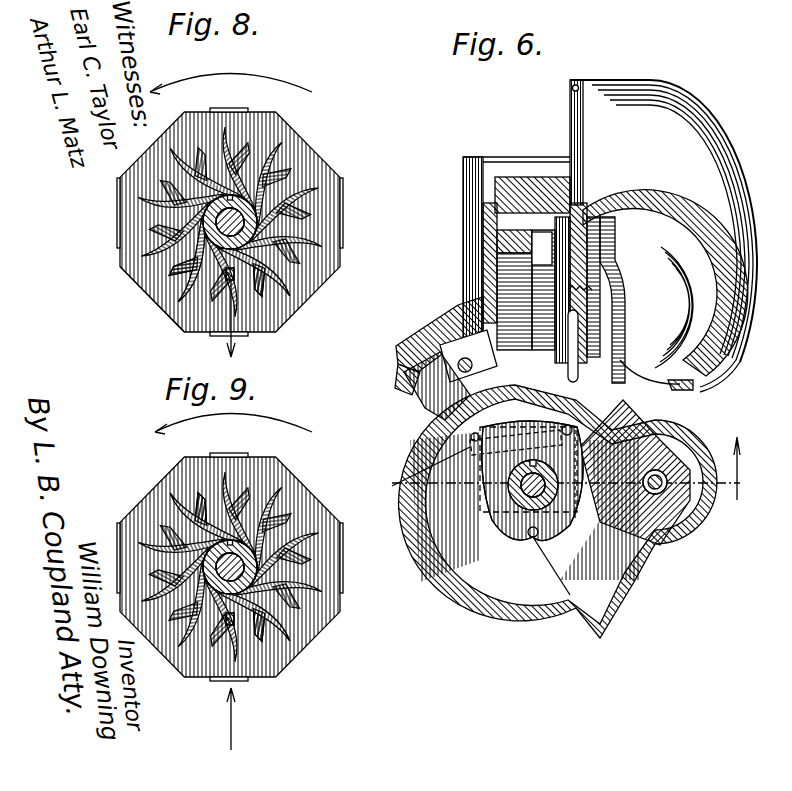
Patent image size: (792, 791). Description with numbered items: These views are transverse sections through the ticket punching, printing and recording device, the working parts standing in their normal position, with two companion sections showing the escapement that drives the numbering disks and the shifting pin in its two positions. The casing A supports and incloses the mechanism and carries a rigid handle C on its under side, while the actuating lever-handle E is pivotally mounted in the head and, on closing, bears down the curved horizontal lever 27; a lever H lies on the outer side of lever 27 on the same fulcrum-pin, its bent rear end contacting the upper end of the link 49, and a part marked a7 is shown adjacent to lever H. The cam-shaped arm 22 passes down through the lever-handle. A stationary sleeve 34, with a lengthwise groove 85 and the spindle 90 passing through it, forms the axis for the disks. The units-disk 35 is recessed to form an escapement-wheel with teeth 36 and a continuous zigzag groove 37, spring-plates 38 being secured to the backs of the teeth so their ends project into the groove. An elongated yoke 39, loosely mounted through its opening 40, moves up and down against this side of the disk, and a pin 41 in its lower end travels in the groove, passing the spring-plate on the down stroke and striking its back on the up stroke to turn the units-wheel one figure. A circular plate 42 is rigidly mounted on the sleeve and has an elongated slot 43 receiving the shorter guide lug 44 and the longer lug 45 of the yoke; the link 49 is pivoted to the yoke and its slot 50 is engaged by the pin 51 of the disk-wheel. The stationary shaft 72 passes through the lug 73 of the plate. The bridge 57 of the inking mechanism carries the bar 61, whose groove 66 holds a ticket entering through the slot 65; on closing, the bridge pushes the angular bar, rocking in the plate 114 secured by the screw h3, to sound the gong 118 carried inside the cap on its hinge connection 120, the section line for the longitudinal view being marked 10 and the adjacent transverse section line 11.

In FIG. 6, the section line 10 is at (749, 468).
In FIG. 6, the section line 11 is at (742, 228).
In FIG. 6, the cam-shaped arm 22 is at (605, 232).
In FIG. 6, the curved horizontal lever 27 is at (482, 238).
In FIG. 8, the stationary sleeve 34 is at (205, 221).
In FIG. 9, the stationary sleeve 34 is at (262, 568).
In FIG. 8, the units-disk 35 is at (142, 278).
In FIG. 6, the units-disk 35 is at (505, 500).
In FIG. 8, the teeth 36 is at (288, 200).
In FIG. 9, the teeth 36 is at (292, 525).
In FIG. 8, the continuous zigzag groove 37 is at (212, 290).
In FIG. 9, the continuous zigzag groove 37 is at (295, 640).
In FIG. 8, the spring-plates 38 is at (250, 292).
In FIG. 9, the spring-plates 38 is at (215, 520).
In FIG. 6, the elongated yoke 39 is at (508, 517).
In FIG. 6, the opening 40 is at (558, 492).
In FIG. 8, the pin 41 is at (215, 322).
In FIG. 9, the pin 41 is at (228, 670).
In FIG. 6, the pin 41 is at (535, 542).
In FIG. 6, the circular plate 42 is at (572, 522).
In FIG. 6, the elongated slot 43 is at (560, 517).
In FIG. 6, the shorter lug 44 is at (575, 522).
In FIG. 6, the longer lug 45 is at (578, 470).
In FIG. 6, the link 49 is at (548, 435).
In FIG. 6, the slot 50 is at (603, 372).
In FIG. 6, the pin 51 is at (400, 450).
In FIG. 6, the bridge 57 is at (450, 338).
In FIG. 6, the bar 61 is at (412, 396).
In FIG. 6, the slot 65 is at (418, 350).
In FIG. 6, the groove 66 is at (408, 378).
In FIG. 6, the stationary shaft 72 is at (665, 490).
In FIG. 6, the lug 73 is at (703, 447).
In FIG. 6, the groove 85 is at (520, 447).
In FIG. 8, the spindle 90 is at (215, 228).
In FIG. 9, the spindle 90 is at (200, 635).
In FIG. 6, the spindle 90 is at (520, 485).
In FIG. 6, the plate 114 is at (602, 316).
In FIG. 6, the gong or bell 118 is at (660, 248).
In FIG. 6, the hinge connection 120 is at (582, 82).
In FIG. 6, the actuating lever-handle E is at (552, 197).
In FIG. 6, the lever H is at (485, 268).
In FIG. 6, the spring housing a7 is at (497, 292).
In FIG. 6, the screw h3 is at (592, 292).
In FIG. 6, the casing A is at (485, 600).
In FIG. 6, the rigid handle C is at (540, 640).